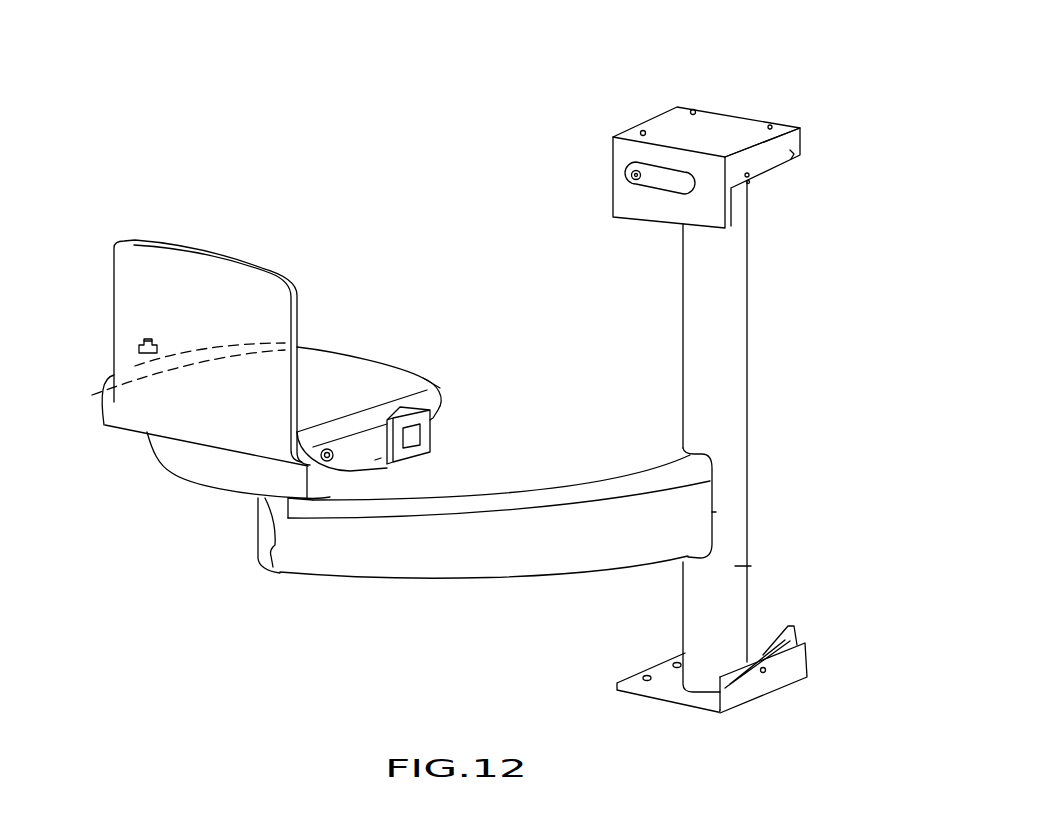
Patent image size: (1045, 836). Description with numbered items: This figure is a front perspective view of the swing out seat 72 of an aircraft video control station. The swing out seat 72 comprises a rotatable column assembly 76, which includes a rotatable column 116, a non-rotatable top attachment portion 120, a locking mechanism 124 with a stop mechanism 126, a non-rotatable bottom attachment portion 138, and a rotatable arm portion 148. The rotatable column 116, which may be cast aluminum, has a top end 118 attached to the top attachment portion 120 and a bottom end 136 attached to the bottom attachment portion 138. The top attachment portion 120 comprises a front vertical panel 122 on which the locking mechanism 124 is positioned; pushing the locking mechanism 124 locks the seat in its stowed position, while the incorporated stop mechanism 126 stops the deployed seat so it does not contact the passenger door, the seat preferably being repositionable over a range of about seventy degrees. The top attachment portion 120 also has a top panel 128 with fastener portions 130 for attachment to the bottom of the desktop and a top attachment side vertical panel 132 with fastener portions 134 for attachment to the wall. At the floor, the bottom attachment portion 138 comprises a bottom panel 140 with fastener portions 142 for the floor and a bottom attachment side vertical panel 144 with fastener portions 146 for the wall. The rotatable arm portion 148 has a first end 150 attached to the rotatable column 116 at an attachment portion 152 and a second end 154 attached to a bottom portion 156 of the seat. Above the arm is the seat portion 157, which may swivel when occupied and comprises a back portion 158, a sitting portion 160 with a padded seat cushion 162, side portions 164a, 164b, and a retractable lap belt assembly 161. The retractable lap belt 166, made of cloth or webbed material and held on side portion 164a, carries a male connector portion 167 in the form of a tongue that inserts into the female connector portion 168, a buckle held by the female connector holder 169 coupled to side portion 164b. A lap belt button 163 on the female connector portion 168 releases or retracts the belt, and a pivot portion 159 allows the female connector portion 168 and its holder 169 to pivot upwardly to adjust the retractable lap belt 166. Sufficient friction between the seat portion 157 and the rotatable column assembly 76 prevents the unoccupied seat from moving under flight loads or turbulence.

The swing out seat 72 is at (224, 112).
The rotatable column assembly 76 is at (737, 566).
The rotatable column 116 is at (748, 350).
The top end 118 is at (748, 184).
The top attachment portion 120 is at (630, 98).
The front vertical panel 122 is at (693, 221).
The locking mechanism 124 is at (657, 190).
The stop mechanism 126 is at (631, 177).
The top panel 128 is at (713, 112).
The fastener portions 130 is at (718, 150).
The top attachment side vertical panel 132 is at (792, 142).
The fastener portions 134 is at (772, 164).
The bottom end 136 is at (705, 692).
The bottom attachment portion 138 is at (813, 677).
The bottom panel 140 is at (648, 690).
The fastener portions 142 is at (676, 664).
The bottom attachment side vertical panel 144 is at (770, 684).
The fastener portions 146 is at (766, 641).
The rotatable arm portion 148 is at (561, 517).
The first end 150 is at (713, 466).
The attachment portion 152 is at (713, 512).
The second end 154 is at (270, 568).
The bottom portion 156 is at (233, 483).
The seat portion 157 is at (92, 397).
The back portion 158 is at (205, 256).
The pivot portion 159 is at (328, 462).
The sitting portion 160 is at (437, 390).
The retractable lap belt assembly 161 is at (160, 345).
The padded seat cushion 162 is at (353, 351).
The lap belt button 163 is at (431, 446).
The side portion 164a is at (100, 383).
The side portion 164b is at (438, 401).
The retractable lap belt 166 is at (133, 348).
The male connector portion 167 is at (148, 340).
The female connector portion 168 is at (432, 434).
The female connector holder 169 is at (375, 460).